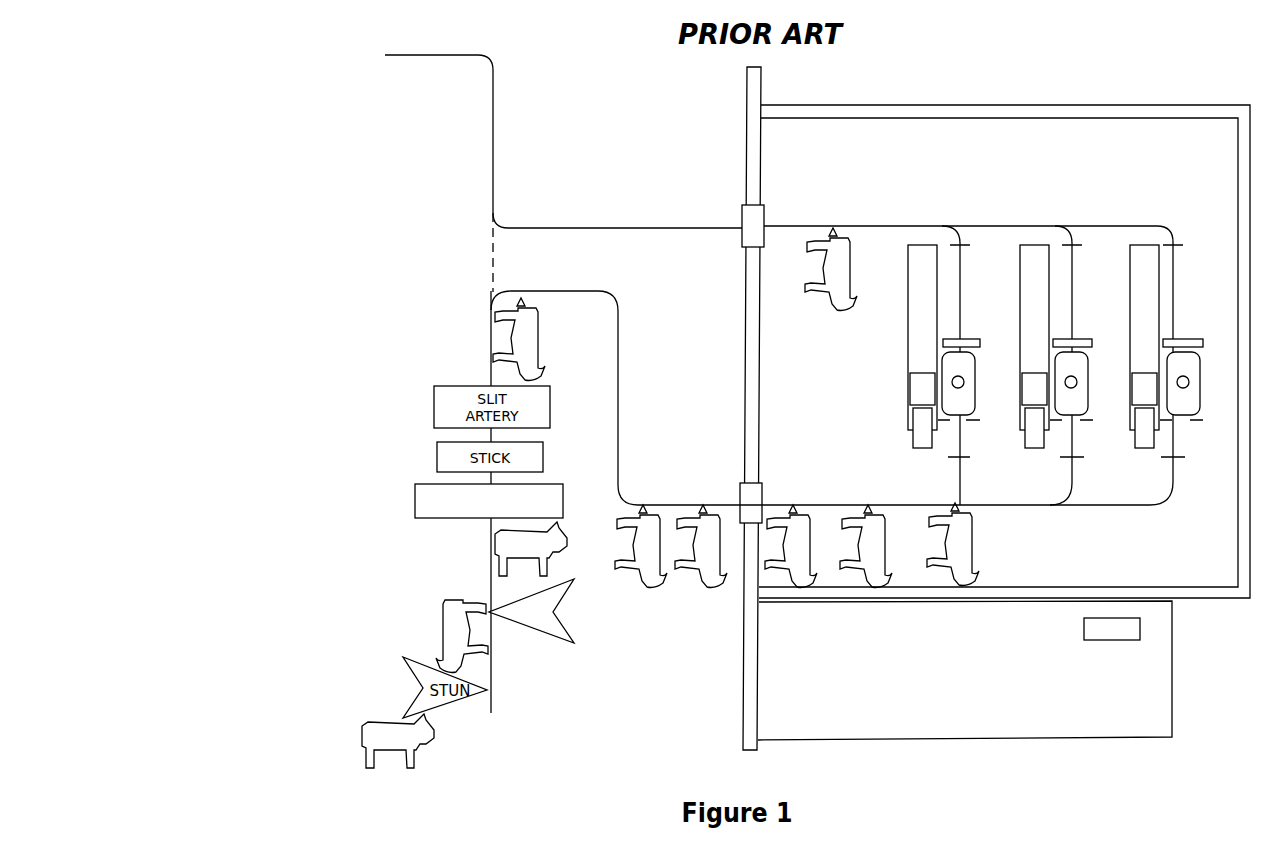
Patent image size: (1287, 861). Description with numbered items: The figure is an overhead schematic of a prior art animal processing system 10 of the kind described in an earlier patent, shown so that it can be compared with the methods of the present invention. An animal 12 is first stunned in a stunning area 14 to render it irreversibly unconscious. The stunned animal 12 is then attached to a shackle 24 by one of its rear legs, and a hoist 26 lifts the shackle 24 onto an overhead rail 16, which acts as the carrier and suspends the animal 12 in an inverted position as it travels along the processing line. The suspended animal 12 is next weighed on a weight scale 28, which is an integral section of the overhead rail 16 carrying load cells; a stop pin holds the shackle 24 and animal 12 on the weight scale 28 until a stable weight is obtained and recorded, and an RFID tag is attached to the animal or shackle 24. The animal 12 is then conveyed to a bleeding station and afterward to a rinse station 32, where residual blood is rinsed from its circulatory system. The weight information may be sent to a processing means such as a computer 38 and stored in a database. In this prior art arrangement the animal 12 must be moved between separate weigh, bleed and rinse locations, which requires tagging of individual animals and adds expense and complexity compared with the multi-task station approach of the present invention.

The prior art animal processing system 10 is at (308, 600).
The animal 12 is at (405, 740).
The stunning area 14 is at (518, 690).
The overhead rail 16 is at (487, 598).
The shackle 24 is at (490, 548).
The hoist 26 is at (574, 643).
The weight scale 28 is at (415, 500).
The rinse station 32 is at (922, 430).
The controller 38 is at (1120, 633).